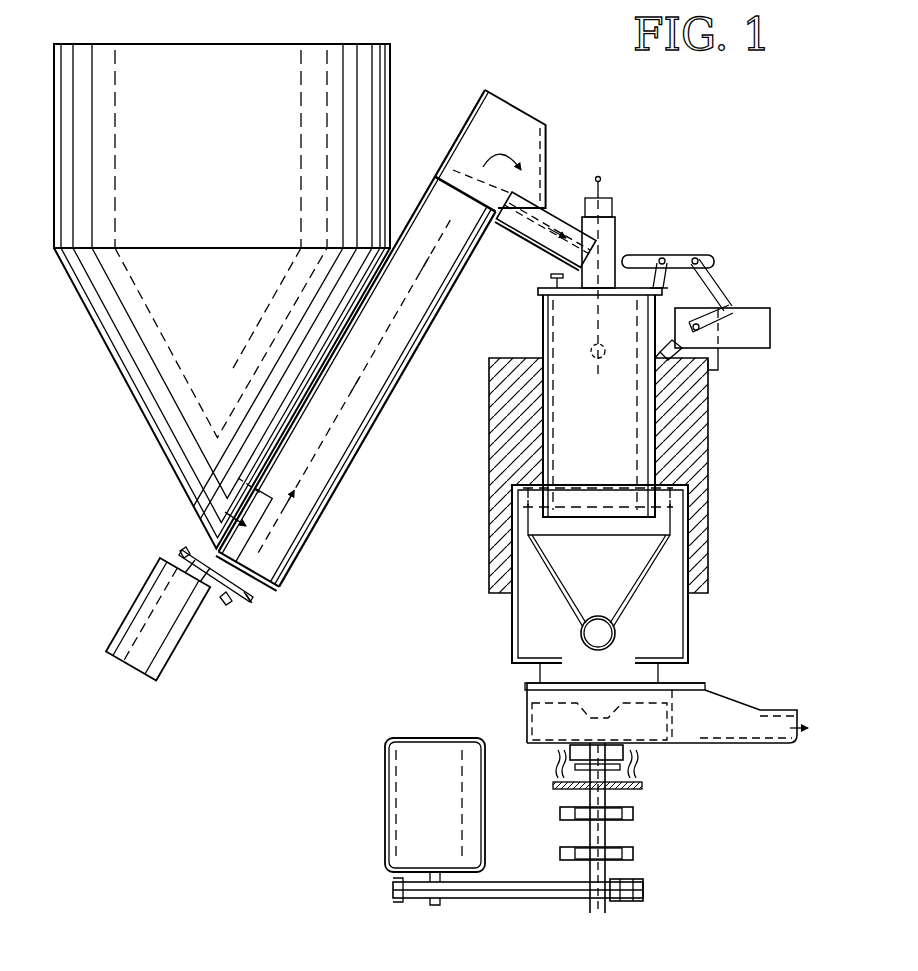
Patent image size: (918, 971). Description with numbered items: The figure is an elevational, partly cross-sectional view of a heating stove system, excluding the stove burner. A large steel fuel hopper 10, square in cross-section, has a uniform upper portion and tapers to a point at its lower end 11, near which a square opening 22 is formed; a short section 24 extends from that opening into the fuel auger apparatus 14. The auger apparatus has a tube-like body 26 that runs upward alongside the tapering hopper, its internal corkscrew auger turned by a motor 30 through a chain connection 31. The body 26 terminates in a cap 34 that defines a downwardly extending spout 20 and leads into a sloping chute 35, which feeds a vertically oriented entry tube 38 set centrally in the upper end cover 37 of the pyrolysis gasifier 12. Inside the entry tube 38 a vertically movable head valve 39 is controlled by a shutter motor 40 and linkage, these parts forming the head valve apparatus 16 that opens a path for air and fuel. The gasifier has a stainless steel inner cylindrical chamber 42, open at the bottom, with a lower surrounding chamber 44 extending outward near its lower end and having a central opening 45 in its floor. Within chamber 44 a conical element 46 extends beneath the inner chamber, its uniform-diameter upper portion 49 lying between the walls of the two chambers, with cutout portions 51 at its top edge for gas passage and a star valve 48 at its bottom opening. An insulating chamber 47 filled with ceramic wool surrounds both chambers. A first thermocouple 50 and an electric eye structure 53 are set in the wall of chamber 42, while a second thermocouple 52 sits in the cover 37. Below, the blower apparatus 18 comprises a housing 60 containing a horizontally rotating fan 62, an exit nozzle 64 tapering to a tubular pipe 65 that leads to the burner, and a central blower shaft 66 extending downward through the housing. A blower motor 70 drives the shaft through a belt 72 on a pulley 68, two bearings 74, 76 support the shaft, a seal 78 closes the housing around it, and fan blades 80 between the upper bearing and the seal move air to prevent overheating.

The fuel hopper 10 is at (399, 45).
The lower end 11 is at (215, 537).
The pyrolysis gasifier 12 is at (485, 405).
The fuel auger apparatus 14 is at (363, 456).
The head valve apparatus 16 is at (690, 245).
The blower apparatus 18 is at (697, 770).
The spout 20 is at (757, 702).
The opening 22 is at (248, 508).
The short section 24 is at (275, 503).
The tube-like body 26 is at (300, 553).
The motor 30 is at (190, 643).
The chain connection 31 is at (215, 593).
The cap 34 is at (518, 118).
The chute 35 is at (508, 230).
The upper end cover 37 is at (538, 291).
The entry tube 38 is at (616, 231).
The head valve 39 is at (612, 205).
The shutter motor 40 is at (752, 312).
The inner cylindrical chamber 42 is at (543, 328).
The lower surrounding chamber 44 is at (690, 623).
The central opening 45 is at (562, 656).
The conical element 46 is at (650, 572).
The insulating chamber 47 is at (712, 451).
The star valve 48 is at (618, 637).
The upper portion of conical element 49 is at (672, 521).
The first thermocouple 50 is at (665, 347).
The cutout portions 51 is at (674, 495).
The second thermocouple 52 is at (557, 274).
The electric eye structure 53 is at (592, 346).
The housing 60 is at (527, 699).
The fan 62 is at (530, 745).
The exit nozzle 64 is at (704, 692).
The tubular pipe 65 is at (797, 720).
The central blower shaft 66 is at (590, 901).
The pulley 68 is at (630, 899).
The blower motor 70 is at (388, 770).
The belt 72 is at (522, 897).
The bearing 74 is at (634, 853).
The bearing 76 is at (634, 813).
The seal 78 is at (623, 751).
The fan blades 80 is at (556, 790).